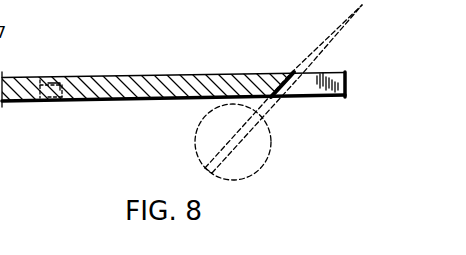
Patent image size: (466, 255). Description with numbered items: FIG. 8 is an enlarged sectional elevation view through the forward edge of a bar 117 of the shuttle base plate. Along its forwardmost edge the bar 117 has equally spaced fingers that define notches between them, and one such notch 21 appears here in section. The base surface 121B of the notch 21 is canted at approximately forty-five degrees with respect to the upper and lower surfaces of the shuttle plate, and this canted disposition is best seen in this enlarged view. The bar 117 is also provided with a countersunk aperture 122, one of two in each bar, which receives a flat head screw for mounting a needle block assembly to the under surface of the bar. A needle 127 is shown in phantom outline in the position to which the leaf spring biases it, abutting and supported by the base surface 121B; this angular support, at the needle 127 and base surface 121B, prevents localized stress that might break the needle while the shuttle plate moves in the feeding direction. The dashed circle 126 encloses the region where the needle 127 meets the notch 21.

The bar 117 is at (172, 81).
The countersunk aperture 122 is at (55, 78).
The notch 21 is at (333, 78).
The base surface 121B is at (302, 96).
The needle 127 is at (302, 64).
The circle detail 126 is at (257, 142).